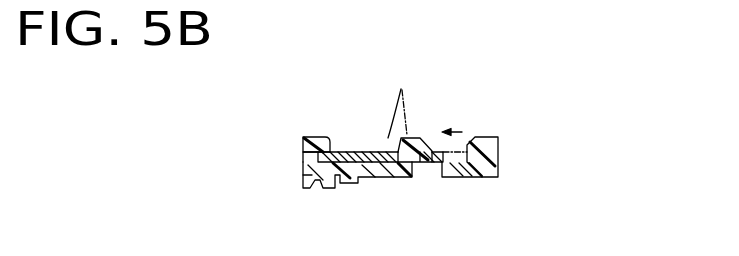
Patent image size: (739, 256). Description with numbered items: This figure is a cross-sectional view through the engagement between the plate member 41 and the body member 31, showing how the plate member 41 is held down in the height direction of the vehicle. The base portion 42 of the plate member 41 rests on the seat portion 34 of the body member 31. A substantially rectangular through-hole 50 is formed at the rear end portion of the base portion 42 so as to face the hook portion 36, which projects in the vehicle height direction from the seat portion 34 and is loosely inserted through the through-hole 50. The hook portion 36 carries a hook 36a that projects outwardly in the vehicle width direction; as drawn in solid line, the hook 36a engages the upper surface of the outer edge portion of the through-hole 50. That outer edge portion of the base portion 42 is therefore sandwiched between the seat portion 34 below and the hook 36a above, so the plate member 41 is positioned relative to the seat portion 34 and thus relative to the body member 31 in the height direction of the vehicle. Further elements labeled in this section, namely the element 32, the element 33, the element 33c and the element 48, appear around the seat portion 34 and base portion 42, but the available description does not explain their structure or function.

The body member 31 is at (497, 150).
The second member 32 is at (479, 179).
The third member 33 is at (315, 186).
The end portion of third member 33c is at (303, 155).
The seat portion 34 is at (378, 178).
The hook portion 36 is at (466, 122).
The hook 36a is at (418, 140).
The plate member 41 is at (377, 153).
The base portion 42 is at (348, 156).
The engaging portion 48 is at (330, 198).
The through-hole 50 is at (403, 99).